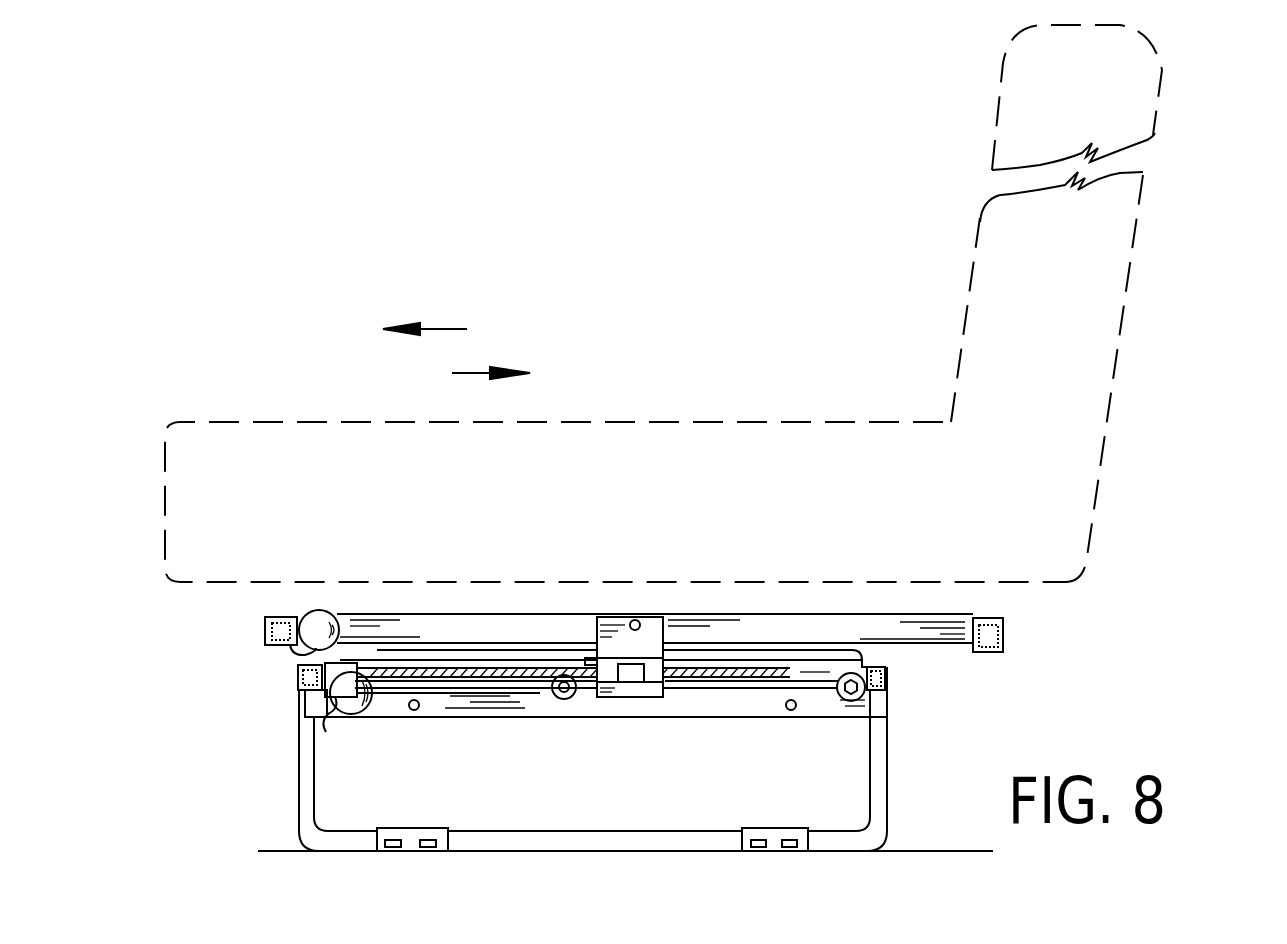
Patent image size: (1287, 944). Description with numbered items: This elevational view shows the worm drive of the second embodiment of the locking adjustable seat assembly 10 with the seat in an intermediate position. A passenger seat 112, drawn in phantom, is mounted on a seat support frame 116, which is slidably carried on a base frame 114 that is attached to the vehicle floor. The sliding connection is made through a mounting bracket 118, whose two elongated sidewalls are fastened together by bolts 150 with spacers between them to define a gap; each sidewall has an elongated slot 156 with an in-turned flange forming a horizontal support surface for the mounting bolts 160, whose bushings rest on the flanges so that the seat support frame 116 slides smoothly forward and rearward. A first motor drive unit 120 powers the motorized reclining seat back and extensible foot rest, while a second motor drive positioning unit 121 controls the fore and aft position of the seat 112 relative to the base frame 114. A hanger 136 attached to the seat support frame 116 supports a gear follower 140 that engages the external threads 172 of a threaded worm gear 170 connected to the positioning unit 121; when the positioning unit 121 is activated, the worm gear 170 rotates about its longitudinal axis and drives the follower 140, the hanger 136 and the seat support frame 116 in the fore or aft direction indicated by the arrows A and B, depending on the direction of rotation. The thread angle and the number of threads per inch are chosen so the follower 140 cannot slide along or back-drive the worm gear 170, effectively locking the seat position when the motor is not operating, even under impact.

The locking adjustable seat assembly 10 is at (1142, 460).
The passenger seat 112 is at (625, 422).
The base frame 114 is at (885, 823).
The seat support frame 116 is at (947, 653).
The mounting bracket 118 is at (692, 717).
The first motor drive unit 120 is at (312, 613).
The second motor drive positioning unit 121 is at (348, 713).
The hanger 136 is at (635, 647).
The gear follower 140 is at (632, 680).
The bolts 150 is at (413, 711).
The elongated slots 156 is at (510, 693).
The mounting bolts 160 is at (566, 700).
The threaded worm gear 170 is at (425, 668).
The external threads 172 is at (463, 672).
The direction A is at (438, 329).
The direction B is at (472, 373).